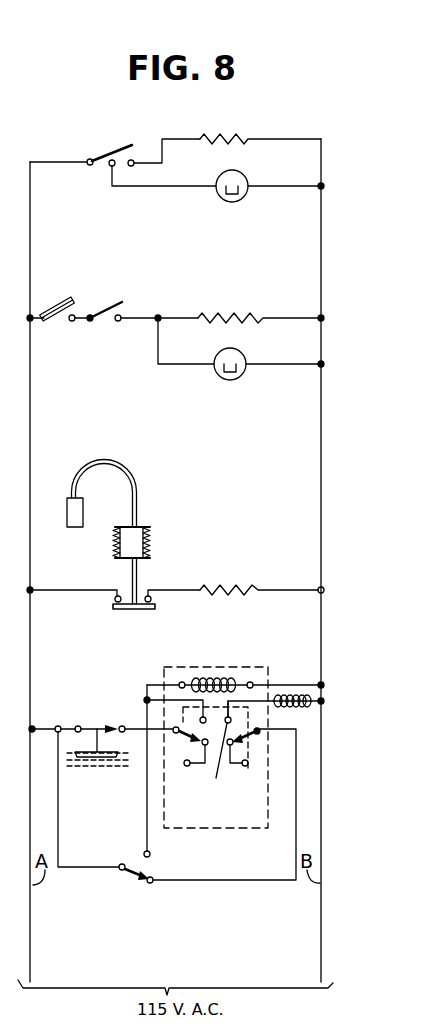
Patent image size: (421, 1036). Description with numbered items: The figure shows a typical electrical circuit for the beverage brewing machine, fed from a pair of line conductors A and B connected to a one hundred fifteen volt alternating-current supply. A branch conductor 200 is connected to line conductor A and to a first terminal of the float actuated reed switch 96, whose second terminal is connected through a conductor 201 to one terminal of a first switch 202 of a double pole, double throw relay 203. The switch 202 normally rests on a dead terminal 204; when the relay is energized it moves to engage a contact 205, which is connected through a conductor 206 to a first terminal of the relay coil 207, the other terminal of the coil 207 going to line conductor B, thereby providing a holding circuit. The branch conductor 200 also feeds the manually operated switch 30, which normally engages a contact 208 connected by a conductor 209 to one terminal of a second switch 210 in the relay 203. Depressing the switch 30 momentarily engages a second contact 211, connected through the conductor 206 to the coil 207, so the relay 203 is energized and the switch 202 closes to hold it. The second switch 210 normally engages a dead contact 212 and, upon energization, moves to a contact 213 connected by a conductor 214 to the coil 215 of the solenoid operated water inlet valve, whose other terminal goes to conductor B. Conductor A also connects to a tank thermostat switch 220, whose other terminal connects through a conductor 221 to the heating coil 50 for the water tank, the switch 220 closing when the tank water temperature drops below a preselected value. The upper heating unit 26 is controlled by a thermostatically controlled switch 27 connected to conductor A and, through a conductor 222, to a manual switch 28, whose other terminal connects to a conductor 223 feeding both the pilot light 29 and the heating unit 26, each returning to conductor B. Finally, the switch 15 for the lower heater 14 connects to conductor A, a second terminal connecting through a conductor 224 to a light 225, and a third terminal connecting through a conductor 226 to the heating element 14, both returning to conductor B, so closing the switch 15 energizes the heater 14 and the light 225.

The lower heater 14 is at (227, 140).
The switch 15 is at (115, 150).
The upper heating unit 26 is at (257, 318).
The thermostatically controlled switch 27 is at (58, 303).
The manual switch 28 is at (107, 304).
The pilot light 29 is at (220, 375).
The manually operated switch 30 is at (133, 880).
The heating coil 50 is at (230, 587).
The float actuated reed switch 96 is at (88, 726).
The branch conductor 200 is at (48, 727).
The conductor 201 is at (140, 727).
The first switch 202 is at (173, 733).
The double pole, double throw relay 203 is at (283, 629).
The dead terminal 204 is at (186, 766).
The contact 205 is at (200, 718).
The conductor 206 is at (147, 816).
The relay coil 207 is at (225, 680).
The contact 208 is at (152, 883).
The conductor 209 is at (242, 882).
The second switch 210 is at (250, 745).
The second contact 211 is at (149, 856).
The dead contact 212 is at (245, 767).
The contact 213 is at (216, 778).
The conductor 214 is at (255, 703).
The coil 215 is at (306, 697).
The tank thermostat switch 220 is at (117, 610).
The conductor 221 is at (177, 593).
The conductor 222 is at (80, 321).
The conductor 223 is at (142, 318).
The conductor 224 is at (130, 187).
The light 225 is at (232, 203).
The conductor 226 is at (147, 162).